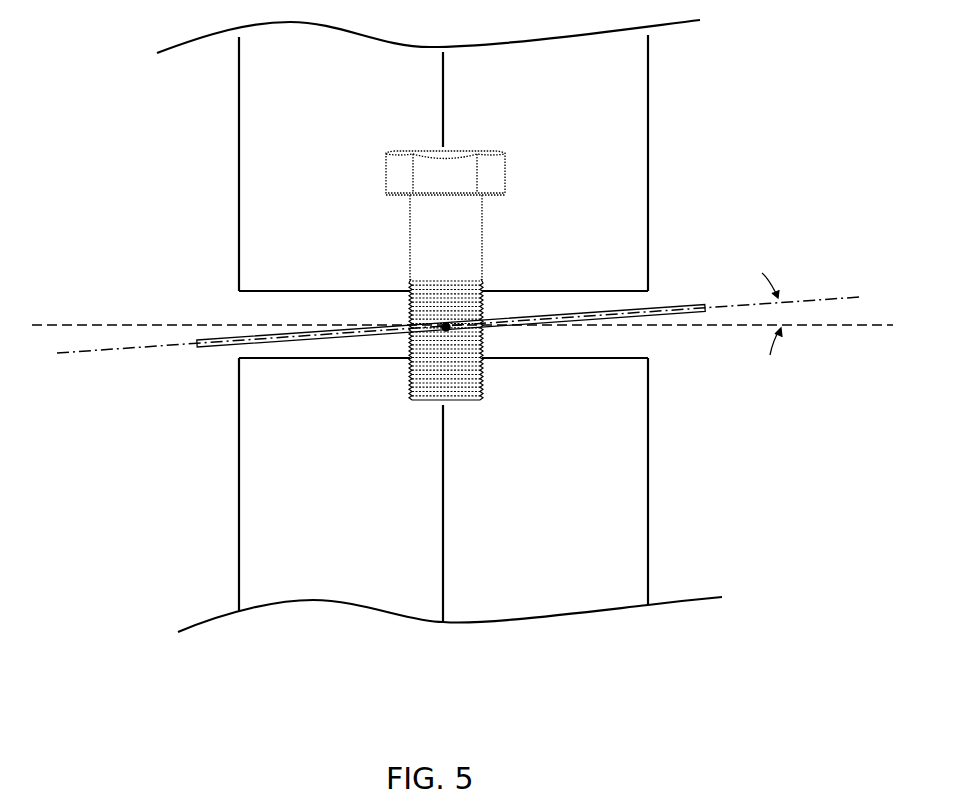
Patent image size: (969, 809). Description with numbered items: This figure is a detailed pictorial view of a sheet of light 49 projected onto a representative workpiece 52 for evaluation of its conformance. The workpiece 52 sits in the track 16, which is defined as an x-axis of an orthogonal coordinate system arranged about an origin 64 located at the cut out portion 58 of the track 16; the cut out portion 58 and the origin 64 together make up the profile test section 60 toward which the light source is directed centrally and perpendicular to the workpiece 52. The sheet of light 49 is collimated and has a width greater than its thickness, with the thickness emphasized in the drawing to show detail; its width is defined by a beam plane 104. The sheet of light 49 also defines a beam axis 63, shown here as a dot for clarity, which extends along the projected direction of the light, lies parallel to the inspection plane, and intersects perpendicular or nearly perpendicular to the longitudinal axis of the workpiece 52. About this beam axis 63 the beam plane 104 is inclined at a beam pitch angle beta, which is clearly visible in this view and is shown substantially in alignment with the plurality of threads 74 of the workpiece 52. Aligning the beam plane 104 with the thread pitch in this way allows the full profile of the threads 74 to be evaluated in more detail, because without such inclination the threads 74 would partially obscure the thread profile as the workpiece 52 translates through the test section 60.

The track 16 is at (266, 552).
The sheet of light 49 is at (247, 340).
The workpiece 52 is at (461, 235).
The cut out portion 58 is at (231, 362).
The test section 60 is at (112, 323).
The beam axis 63 is at (446, 327).
The origin 64 is at (443, 409).
The threads 74 is at (486, 371).
The beam plane 104 is at (808, 300).